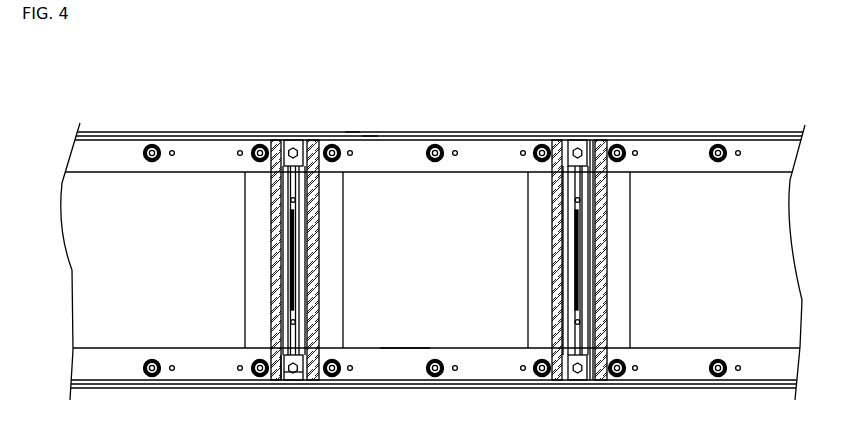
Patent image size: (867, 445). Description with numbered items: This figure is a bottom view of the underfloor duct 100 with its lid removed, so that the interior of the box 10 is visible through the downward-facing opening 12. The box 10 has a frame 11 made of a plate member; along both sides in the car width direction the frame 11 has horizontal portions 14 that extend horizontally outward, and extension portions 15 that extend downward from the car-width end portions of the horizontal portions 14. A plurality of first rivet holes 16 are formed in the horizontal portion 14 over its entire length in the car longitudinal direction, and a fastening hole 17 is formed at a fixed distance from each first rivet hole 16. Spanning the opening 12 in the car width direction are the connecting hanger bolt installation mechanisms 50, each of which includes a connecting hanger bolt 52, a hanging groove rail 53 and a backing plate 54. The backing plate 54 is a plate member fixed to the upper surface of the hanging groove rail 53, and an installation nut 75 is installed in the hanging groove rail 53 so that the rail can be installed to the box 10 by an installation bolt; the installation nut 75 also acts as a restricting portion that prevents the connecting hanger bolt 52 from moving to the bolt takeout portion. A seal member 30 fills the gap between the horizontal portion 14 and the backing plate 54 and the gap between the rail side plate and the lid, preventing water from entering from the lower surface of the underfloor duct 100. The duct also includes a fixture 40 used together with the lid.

The underfloor duct 100 is at (536, 96).
The box 10 is at (487, 128).
The frame 11 is at (370, 136).
The opening 12 is at (402, 332).
The horizontal portion 14 is at (400, 148).
The extension portion 15 is at (352, 136).
The first rivet hole 16 is at (455, 149).
The fastening hole 17 is at (432, 146).
The seal member 30 is at (275, 138).
The fixture 40 is at (436, 377).
The connecting hanger bolt installation mechanism 50 is at (298, 132).
The connecting hanger bolt 52 is at (293, 375).
The hanging groove rail 53 is at (278, 368).
The backing plate 54 is at (332, 377).
The installation nut 75 is at (288, 140).